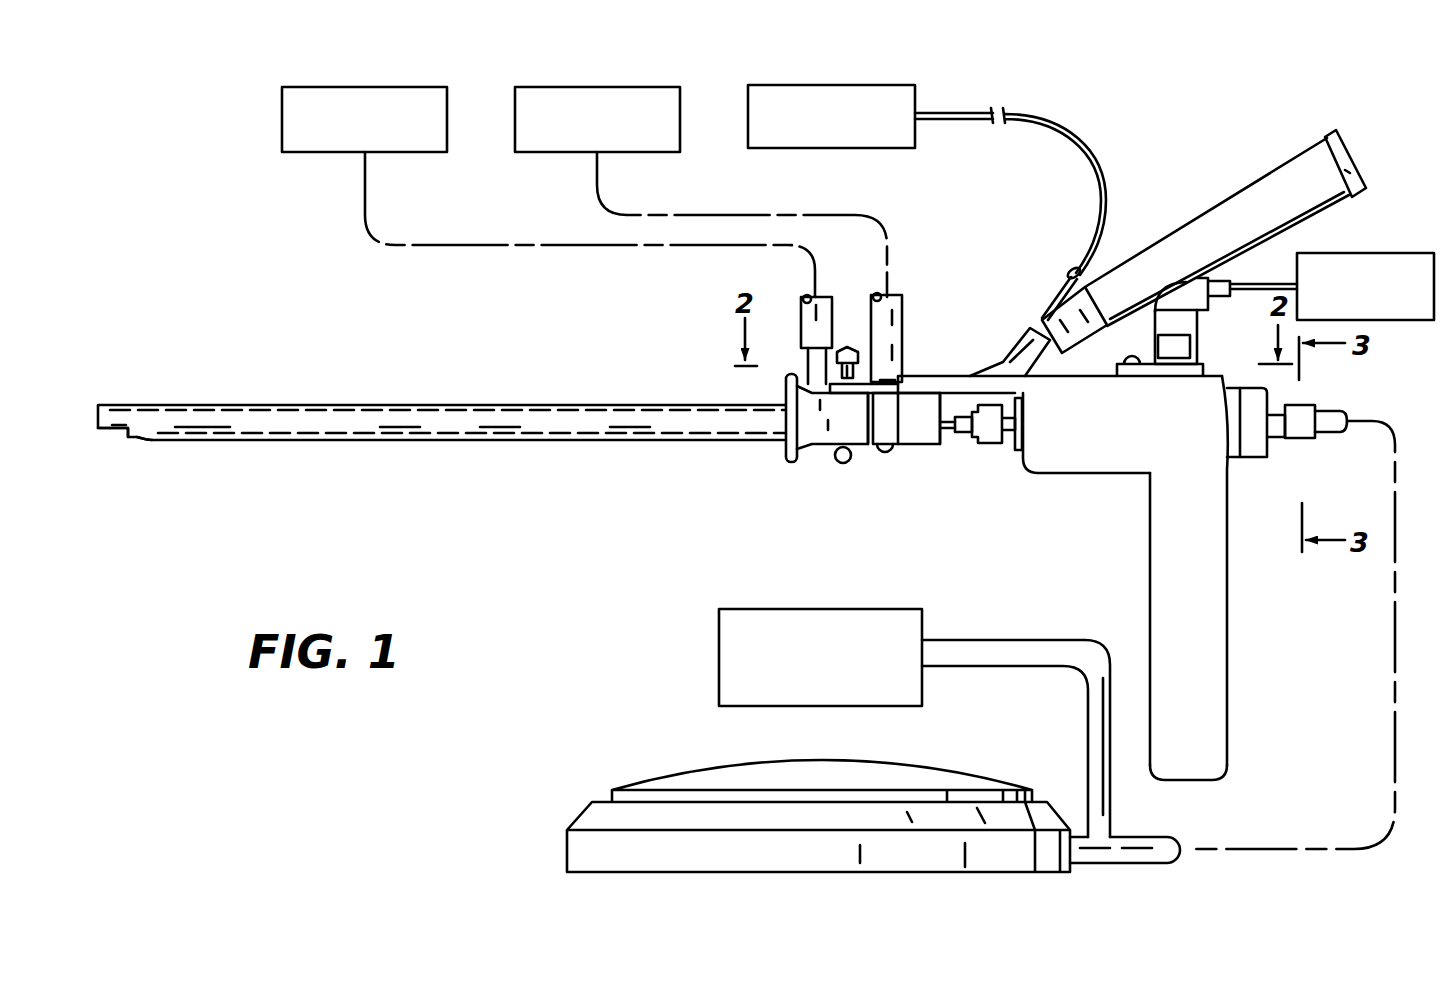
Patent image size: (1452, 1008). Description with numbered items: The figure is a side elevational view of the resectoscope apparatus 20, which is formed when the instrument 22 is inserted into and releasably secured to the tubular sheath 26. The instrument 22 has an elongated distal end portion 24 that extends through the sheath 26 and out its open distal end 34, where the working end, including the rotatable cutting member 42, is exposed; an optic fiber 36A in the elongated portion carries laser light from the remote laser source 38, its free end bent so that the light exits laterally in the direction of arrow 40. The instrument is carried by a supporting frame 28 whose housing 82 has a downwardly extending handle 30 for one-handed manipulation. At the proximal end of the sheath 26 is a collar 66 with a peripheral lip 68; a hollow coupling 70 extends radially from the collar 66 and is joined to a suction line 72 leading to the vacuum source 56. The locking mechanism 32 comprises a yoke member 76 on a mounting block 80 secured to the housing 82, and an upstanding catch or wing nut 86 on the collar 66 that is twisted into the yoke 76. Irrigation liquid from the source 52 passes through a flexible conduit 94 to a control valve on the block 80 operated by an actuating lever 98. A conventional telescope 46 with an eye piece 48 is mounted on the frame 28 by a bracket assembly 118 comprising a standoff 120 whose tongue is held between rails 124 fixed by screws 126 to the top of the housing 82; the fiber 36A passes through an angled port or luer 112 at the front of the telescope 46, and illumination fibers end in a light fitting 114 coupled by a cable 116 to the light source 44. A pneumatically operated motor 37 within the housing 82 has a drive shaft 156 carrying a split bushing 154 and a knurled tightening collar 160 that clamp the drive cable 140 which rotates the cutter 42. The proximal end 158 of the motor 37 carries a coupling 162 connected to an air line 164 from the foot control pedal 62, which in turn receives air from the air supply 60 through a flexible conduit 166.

The resectoscope apparatus 20 is at (757, 468).
The instrument 22 is at (1156, 559).
The elongated distal end portion 24 is at (438, 405).
The tubular sheath 26 is at (308, 405).
The supporting frame 28 is at (955, 372).
The handle 30 is at (1208, 612).
The locking mechanism 32 is at (862, 378).
The open distal end 34 is at (135, 436).
The optic fiber 36A is at (1072, 140).
The pneumatically operated motor 37 is at (1250, 432).
The laser source 38 is at (862, 135).
The arrow 40 is at (84, 440).
The rotatable cutting member 42 is at (132, 442).
The light source 44 is at (1375, 262).
The telescope 46 is at (1263, 194).
The eye piece 48 is at (1345, 155).
The irrigation liquid source 52 is at (655, 143).
The vacuum source 56 is at (412, 140).
The air supply 60 is at (845, 618).
The foot control pedal 62 is at (882, 778).
The base member or collar 66 is at (855, 450).
The peripheral lip 68 is at (790, 452).
The coupling 70 is at (808, 362).
The suction line 72 is at (818, 300).
The yoke member 76 is at (885, 392).
The mounting block 80 is at (925, 437).
The housing 82 is at (1113, 480).
The catch or wing nut 86 is at (845, 346).
The flexible conduit or tube 94 is at (902, 300).
The actuating lever 98 is at (840, 463).
The angled port or luer 112 is at (1068, 272).
The light fitting 114 is at (1220, 280).
The cable 116 is at (1280, 285).
The bracket assembly 118 is at (1151, 327).
The standoff 120 is at (1220, 328).
The rails 124 is at (1160, 366).
The screws 126 is at (1135, 368).
The drive cable 140 is at (948, 433).
The split bushing 154 is at (968, 433).
The drive shaft 156 is at (1007, 435).
The proximal end of the air motor 158 is at (1020, 418).
The knurled tightening collar 160 is at (994, 408).
The coupling 162 is at (1310, 413).
The air line 164 is at (1352, 418).
The flexible conduit 166 is at (1045, 660).